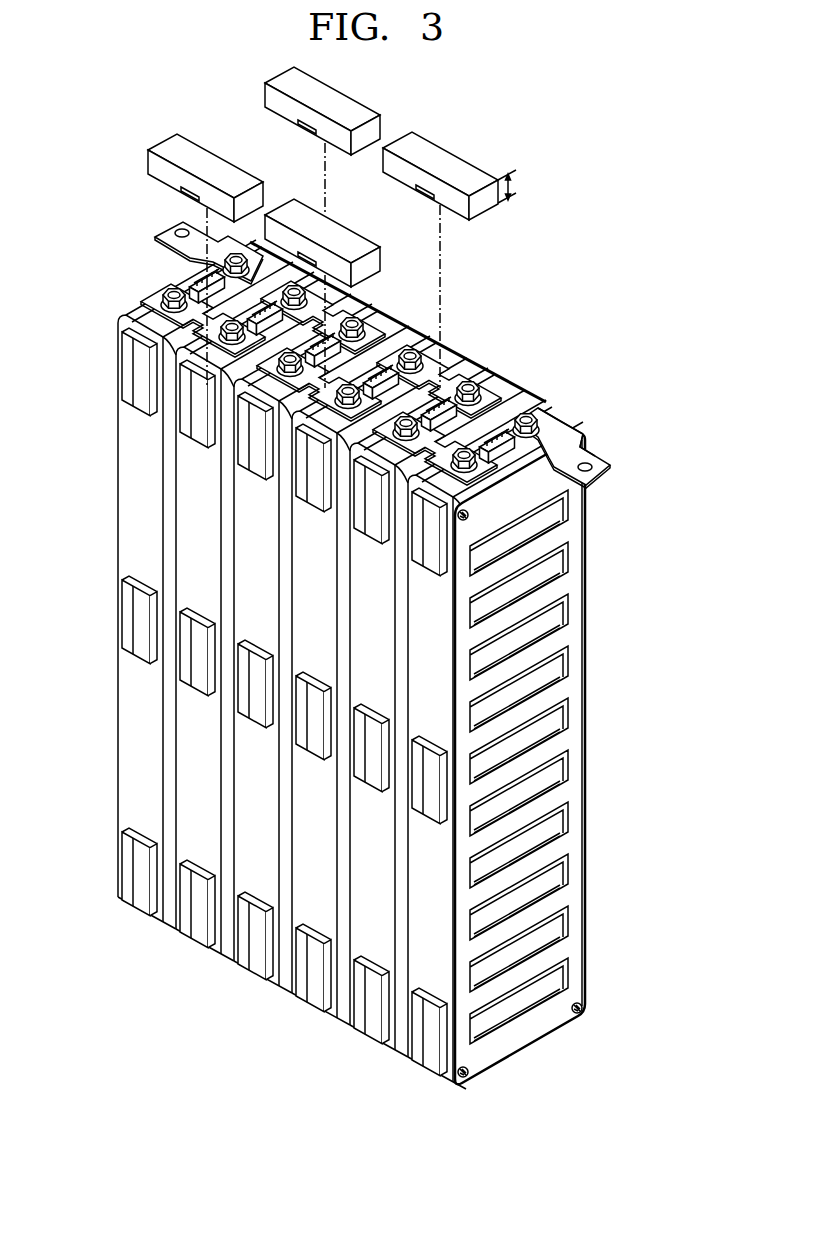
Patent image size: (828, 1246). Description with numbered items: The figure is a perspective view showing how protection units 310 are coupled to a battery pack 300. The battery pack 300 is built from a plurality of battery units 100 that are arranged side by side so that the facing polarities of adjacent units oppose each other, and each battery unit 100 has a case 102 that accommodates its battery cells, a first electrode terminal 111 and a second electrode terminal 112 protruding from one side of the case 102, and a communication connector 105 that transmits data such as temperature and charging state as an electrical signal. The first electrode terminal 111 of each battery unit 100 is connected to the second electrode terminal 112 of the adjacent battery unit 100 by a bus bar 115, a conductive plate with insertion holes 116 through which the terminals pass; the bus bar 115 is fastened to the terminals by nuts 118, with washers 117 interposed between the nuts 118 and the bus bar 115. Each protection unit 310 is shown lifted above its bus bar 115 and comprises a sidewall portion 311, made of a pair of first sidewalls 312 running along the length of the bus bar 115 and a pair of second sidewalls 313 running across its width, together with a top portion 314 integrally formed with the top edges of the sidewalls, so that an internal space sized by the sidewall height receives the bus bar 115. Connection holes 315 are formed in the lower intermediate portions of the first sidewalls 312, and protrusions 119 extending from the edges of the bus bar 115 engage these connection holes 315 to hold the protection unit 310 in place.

The battery pack 300 is at (119, 173).
The battery unit 100 is at (553, 400).
The case 102 is at (584, 630).
The communication connector 105 is at (447, 412).
The first electrode terminal 111 is at (412, 358).
The second electrode terminal 112 is at (355, 386).
The bus bar 115 is at (605, 488).
The insertion hole 116 is at (593, 467).
The washer 117 is at (570, 424).
The nut 118 is at (552, 411).
The protrusion 119 is at (586, 440).
The protection unit 310 is at (482, 145).
The sidewall portion 311 is at (550, 218).
The first sidewall 312 is at (458, 208).
The second sidewall 313 is at (484, 208).
The top portion 314 is at (450, 151).
The connection hole 315 is at (423, 200).